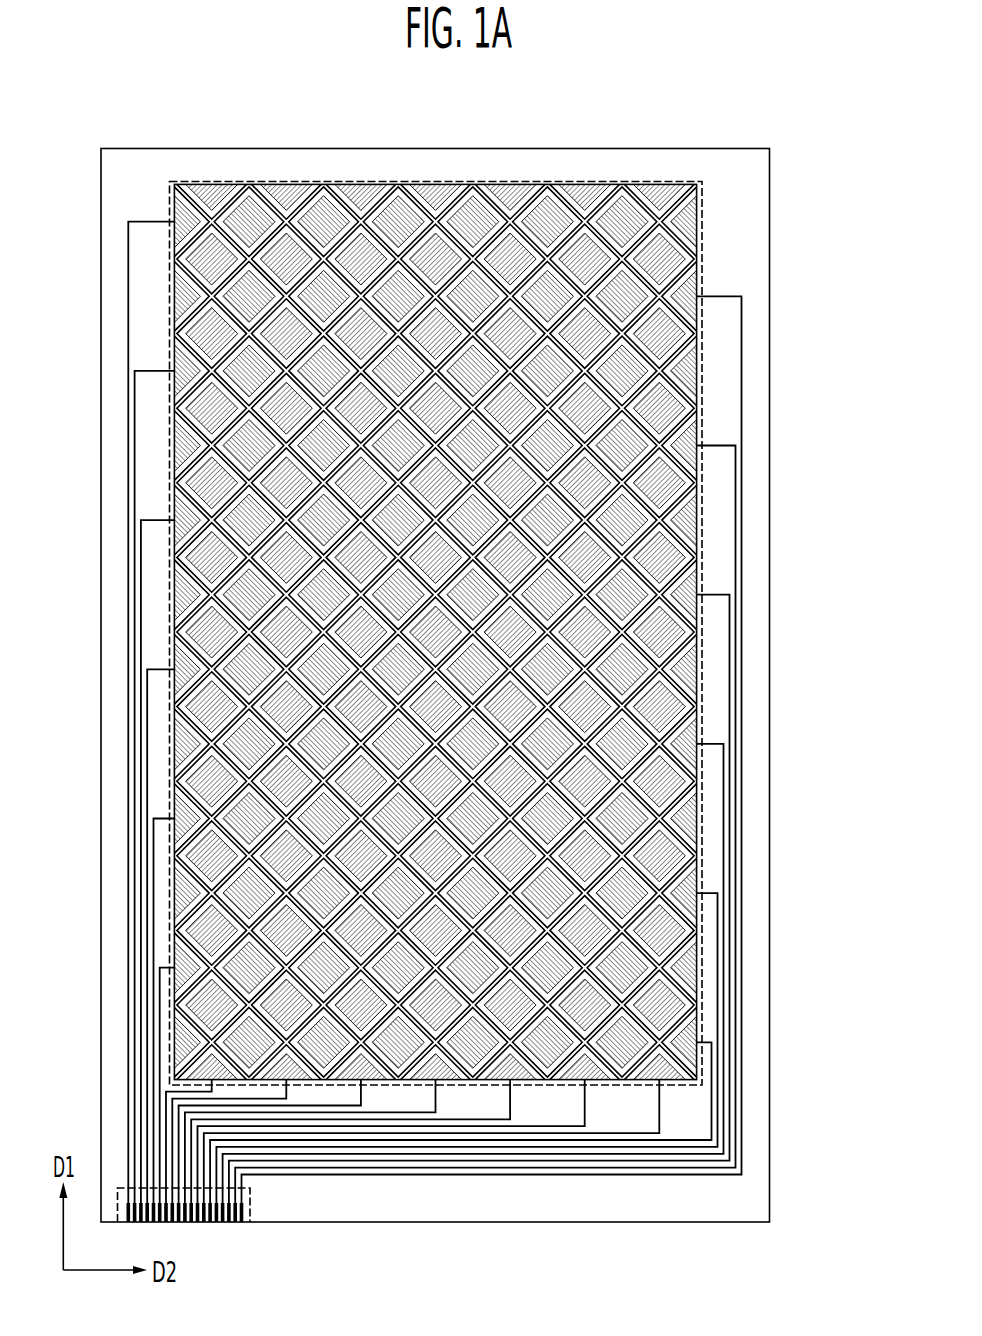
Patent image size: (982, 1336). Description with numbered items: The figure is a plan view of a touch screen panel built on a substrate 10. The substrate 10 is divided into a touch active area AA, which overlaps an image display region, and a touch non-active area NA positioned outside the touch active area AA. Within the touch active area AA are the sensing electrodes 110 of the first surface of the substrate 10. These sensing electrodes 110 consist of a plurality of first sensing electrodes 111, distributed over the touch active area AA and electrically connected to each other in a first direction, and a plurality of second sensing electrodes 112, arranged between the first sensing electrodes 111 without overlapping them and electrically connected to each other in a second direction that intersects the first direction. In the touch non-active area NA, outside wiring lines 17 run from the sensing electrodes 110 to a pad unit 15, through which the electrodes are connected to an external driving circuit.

The substrate 10 is at (572, 149).
The sensing electrodes 110 is at (308, 85).
The first sensing electrodes 111 is at (209, 247).
The second sensing electrodes 112 is at (247, 208).
The outside wiring lines 17 is at (130, 272).
The pad unit 15 is at (250, 1205).
The touch active area AA is at (702, 246).
The touch non-active area NA is at (757, 307).